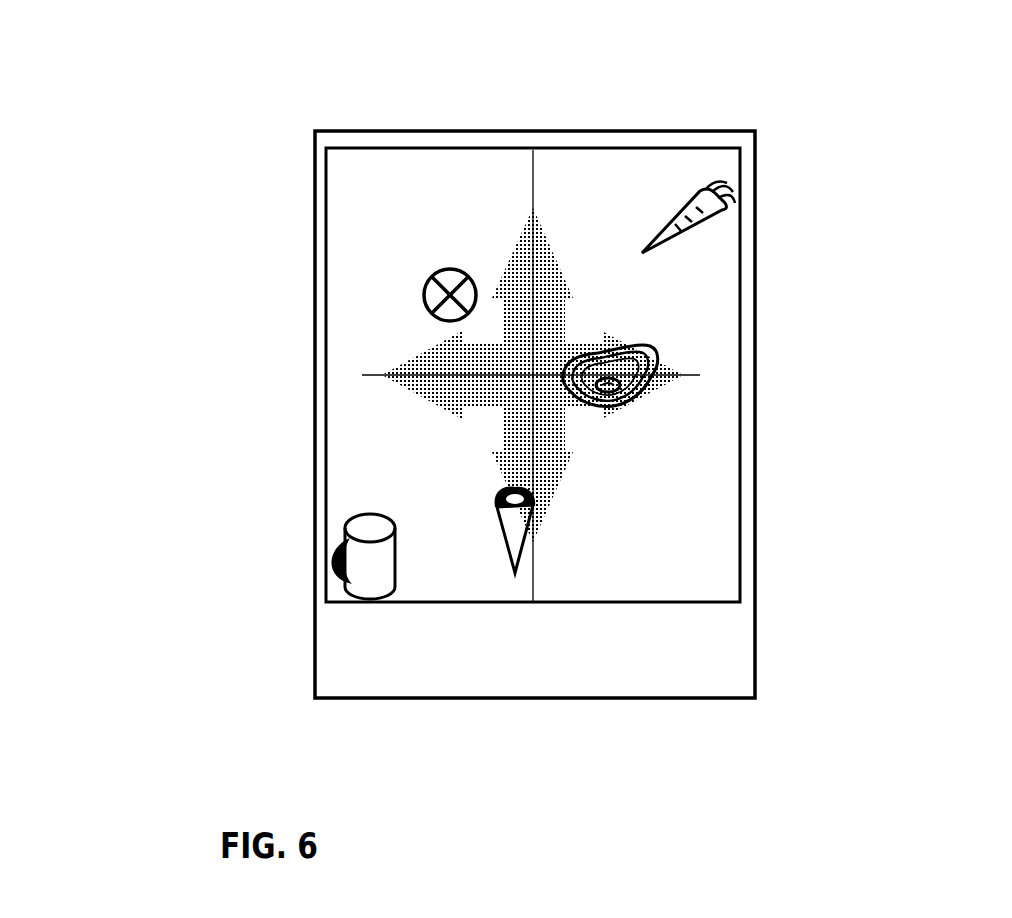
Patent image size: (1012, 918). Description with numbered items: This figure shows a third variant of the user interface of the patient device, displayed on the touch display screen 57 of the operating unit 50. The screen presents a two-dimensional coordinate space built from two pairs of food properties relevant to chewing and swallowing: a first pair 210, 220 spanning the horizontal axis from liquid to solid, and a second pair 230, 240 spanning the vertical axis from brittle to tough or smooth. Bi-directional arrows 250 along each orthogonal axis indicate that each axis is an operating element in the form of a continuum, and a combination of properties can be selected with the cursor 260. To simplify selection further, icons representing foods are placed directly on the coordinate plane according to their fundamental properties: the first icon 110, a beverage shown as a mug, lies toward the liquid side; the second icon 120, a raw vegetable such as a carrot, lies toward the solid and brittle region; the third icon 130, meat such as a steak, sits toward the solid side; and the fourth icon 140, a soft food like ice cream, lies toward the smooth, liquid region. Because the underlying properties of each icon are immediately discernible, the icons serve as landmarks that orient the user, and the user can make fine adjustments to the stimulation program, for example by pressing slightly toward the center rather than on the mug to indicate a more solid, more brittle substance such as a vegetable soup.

The operating unit 50 is at (687, 138).
The touch display screen 57 is at (443, 195).
The first icon 110 is at (343, 566).
The second icon 120 is at (727, 200).
The third icon 130 is at (650, 405).
The fourth icon 140 is at (503, 508).
The first food property of first pair 210 is at (343, 342).
The second food property of first pair 220 is at (697, 375).
The first food property of second pair 230 is at (535, 150).
The second food property of second pair 240 is at (597, 605).
The bi-directional arrows 250 is at (563, 458).
The cursor 260 is at (428, 297).